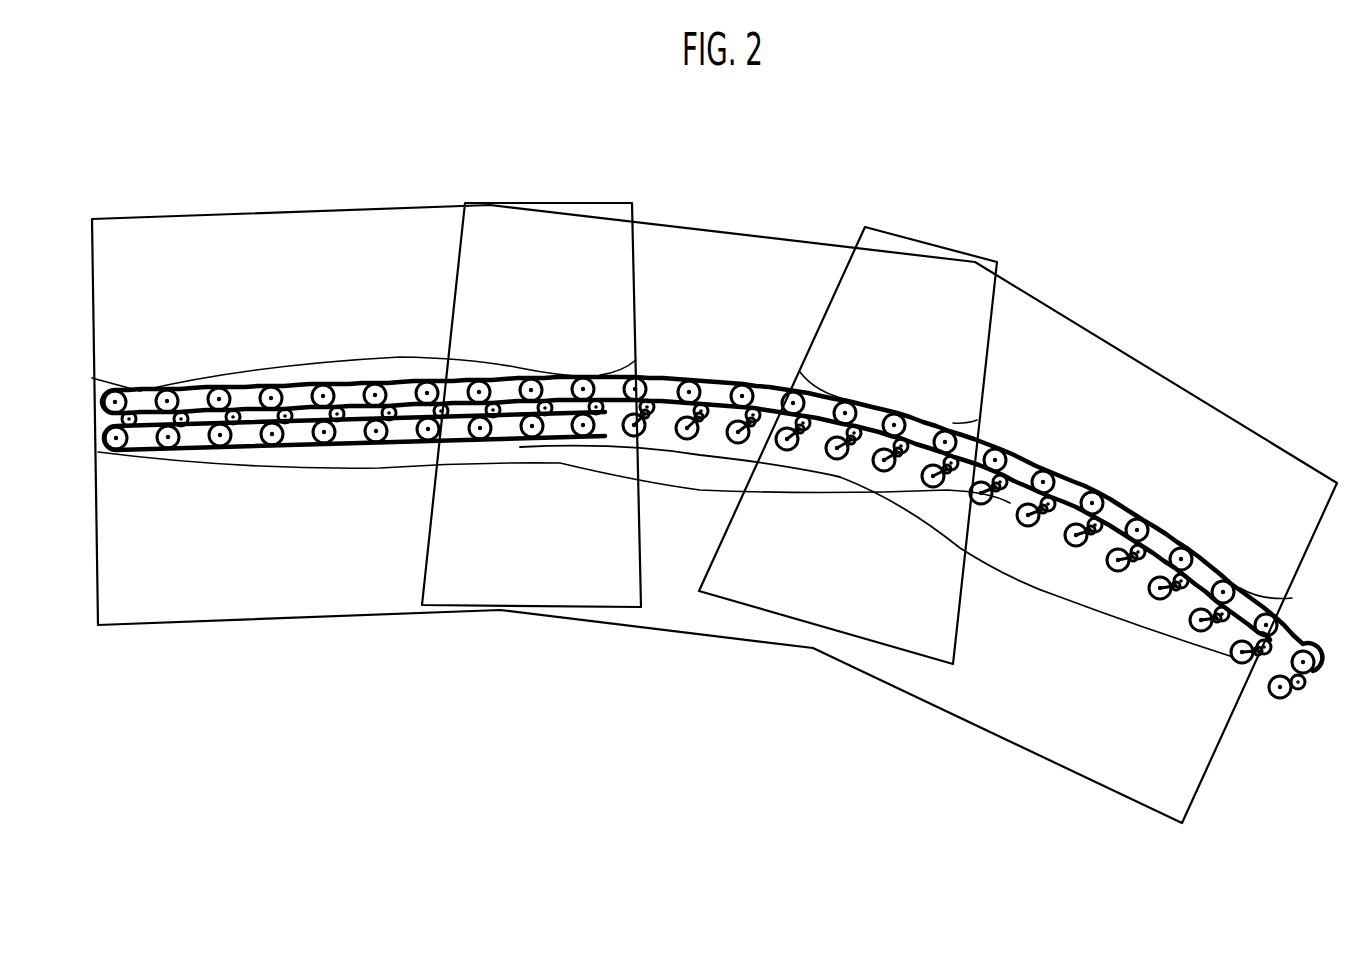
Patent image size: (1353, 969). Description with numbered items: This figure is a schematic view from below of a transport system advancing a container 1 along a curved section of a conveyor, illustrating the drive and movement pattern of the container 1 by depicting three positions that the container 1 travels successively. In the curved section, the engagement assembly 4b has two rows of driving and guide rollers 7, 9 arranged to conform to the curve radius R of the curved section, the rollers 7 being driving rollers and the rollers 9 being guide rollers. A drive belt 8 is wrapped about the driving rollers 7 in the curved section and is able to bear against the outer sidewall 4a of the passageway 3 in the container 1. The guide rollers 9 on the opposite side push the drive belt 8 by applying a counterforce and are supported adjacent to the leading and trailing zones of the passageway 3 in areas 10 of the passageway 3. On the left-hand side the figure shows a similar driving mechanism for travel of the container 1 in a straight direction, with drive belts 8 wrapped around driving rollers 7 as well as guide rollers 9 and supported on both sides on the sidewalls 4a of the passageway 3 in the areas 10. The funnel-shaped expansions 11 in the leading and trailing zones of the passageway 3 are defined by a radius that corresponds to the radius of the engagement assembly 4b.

The container 1 is at (763, 253).
The passageway 3 is at (1118, 641).
The outer sidewall 4a is at (1026, 455).
The engagement assembly 4b is at (724, 366).
The driving roller 7 is at (325, 442).
The drive belt 8 is at (253, 453).
The guide roller 9 is at (273, 397).
The area of the passageway 10 is at (140, 389).
The funnel-shaped expansion 11 is at (103, 452).
The curve radius R is at (1109, 514).